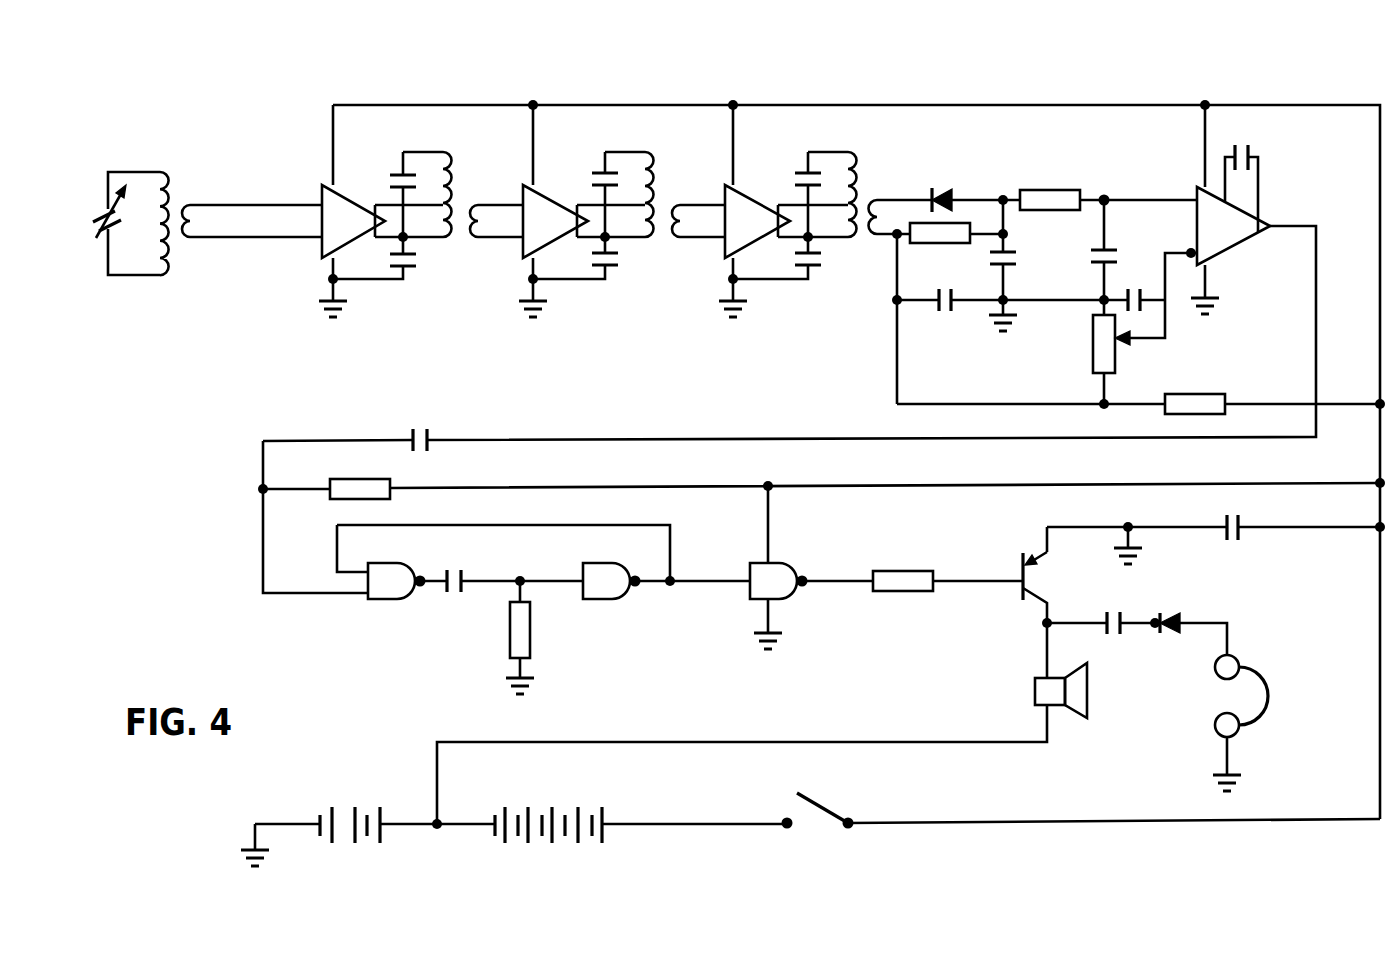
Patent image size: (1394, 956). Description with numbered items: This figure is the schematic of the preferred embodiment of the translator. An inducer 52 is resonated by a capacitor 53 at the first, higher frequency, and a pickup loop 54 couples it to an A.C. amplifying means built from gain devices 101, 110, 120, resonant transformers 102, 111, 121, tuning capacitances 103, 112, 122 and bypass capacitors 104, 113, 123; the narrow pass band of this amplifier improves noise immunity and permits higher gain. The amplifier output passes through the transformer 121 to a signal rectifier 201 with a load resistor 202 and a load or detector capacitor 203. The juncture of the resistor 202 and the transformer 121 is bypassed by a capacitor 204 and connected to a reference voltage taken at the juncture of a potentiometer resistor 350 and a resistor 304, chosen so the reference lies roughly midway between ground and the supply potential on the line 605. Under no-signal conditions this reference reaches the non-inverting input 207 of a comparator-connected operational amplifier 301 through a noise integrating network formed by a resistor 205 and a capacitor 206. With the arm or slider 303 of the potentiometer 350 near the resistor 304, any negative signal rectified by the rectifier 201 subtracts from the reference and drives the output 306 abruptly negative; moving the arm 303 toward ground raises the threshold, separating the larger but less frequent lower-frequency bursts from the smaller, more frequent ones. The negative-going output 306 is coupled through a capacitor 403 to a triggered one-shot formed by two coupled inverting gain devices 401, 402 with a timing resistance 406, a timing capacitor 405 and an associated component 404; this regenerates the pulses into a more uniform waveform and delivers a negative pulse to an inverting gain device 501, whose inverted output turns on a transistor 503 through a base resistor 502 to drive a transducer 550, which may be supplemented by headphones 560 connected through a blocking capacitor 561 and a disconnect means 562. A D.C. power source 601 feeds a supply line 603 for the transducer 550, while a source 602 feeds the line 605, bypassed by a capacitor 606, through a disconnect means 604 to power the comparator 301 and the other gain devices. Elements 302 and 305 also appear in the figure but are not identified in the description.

The inducer 52 is at (162, 163).
The capacitor 53 is at (95, 202).
The pickup loop 54 is at (187, 245).
The gain device 101 is at (317, 190).
The resonant transformer 102 is at (458, 173).
The tuning capacitance 103 is at (390, 180).
The bypass capacitor 104 is at (437, 287).
The gain device 110 is at (560, 188).
The resonant transformer 111 is at (658, 178).
The tuning capacitance 112 is at (598, 167).
The bypass capacitor 113 is at (612, 290).
The gain device 120 is at (762, 188).
The resonant transformer 121 is at (865, 185).
The tuning capacitance 122 is at (797, 167).
The bypass capacitor 123 is at (815, 290).
The signal rectifier 201 is at (960, 190).
The load resistor 202 is at (922, 248).
The load or detector capacitor 203 is at (1018, 253).
The capacitor 204 is at (962, 306).
The noise integrating network resistor 205 is at (1022, 182).
The capacitor 206 is at (1120, 257).
The non-inverting input 207 is at (1143, 193).
The comparator connected operational amplifier 301 is at (1224, 232).
The feedback capacitor 302 is at (1140, 315).
The arm or slider 303 is at (1142, 345).
The resistor 304 is at (1215, 388).
The capacitor 305 is at (1265, 167).
The output 306 is at (1320, 237).
The potentiometer resistor 350 is at (1092, 365).
The inverting gain device 401 is at (403, 541).
The inverting gain device 402 is at (627, 541).
The capacitor 403 is at (433, 435).
The associated component 404 is at (323, 483).
The timing capacitor 405 is at (470, 573).
The timing resistance 406 is at (498, 642).
The inverting gain device 501 is at (780, 577).
The base resistor 502 is at (863, 565).
The transistor 503 is at (1013, 588).
The transducer 550 is at (1093, 690).
The headphones 560 is at (1275, 693).
The blocking capacitor 561 is at (1130, 610).
The disconnect means 562 is at (1185, 612).
The D.C. power source 601 is at (343, 800).
The source 602 is at (550, 803).
The supply line 603 is at (823, 715).
The disconnect means 604 is at (835, 807).
The supply line 605 is at (1028, 817).
The capacitor 606 is at (1243, 533).